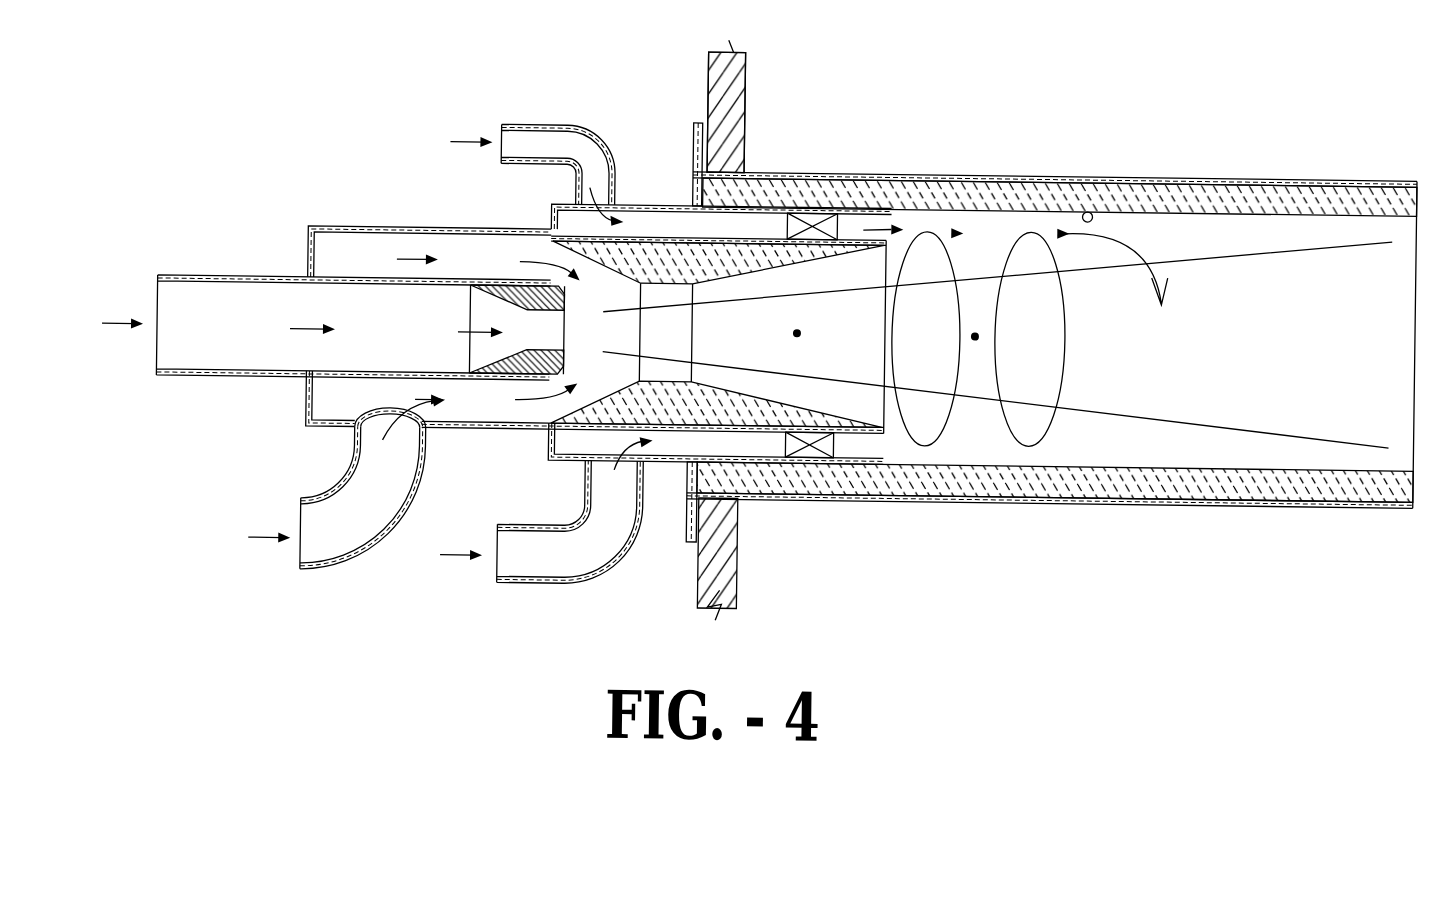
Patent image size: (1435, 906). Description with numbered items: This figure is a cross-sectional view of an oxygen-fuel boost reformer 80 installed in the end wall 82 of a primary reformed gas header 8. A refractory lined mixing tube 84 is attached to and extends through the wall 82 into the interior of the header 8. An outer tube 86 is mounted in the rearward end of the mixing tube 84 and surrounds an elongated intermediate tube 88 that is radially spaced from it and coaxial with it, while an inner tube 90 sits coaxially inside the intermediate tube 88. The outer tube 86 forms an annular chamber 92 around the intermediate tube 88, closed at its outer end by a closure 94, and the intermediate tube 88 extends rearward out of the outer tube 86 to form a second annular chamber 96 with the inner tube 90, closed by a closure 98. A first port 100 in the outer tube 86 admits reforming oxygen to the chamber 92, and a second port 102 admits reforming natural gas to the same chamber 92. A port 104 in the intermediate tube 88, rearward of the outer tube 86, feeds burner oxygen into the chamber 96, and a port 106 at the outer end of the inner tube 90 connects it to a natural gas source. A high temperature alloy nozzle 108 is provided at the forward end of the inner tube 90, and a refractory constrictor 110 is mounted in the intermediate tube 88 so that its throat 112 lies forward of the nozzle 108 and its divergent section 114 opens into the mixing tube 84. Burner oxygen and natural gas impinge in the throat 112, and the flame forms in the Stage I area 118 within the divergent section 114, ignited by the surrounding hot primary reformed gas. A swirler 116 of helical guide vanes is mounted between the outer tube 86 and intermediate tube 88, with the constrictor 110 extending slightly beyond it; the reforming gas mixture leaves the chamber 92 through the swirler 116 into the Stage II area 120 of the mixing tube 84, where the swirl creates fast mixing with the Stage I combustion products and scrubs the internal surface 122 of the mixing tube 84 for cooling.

The primary reformed gas header 8 is at (755, 102).
The oxygen-fuel boost reformer 80 is at (648, 317).
The end wall 82 is at (762, 331).
The refractory lined mixing tube 84 is at (1052, 318).
The outer tube 86 is at (658, 182).
The intermediate tube 88 is at (412, 303).
The inner tube 90 is at (326, 307).
The annular chamber 92 is at (558, 196).
The closure 94 is at (675, 328).
The annular chamber 96 is at (336, 239).
The closure 98 is at (328, 415).
The first port 100 is at (533, 142).
The second port 102 is at (546, 510).
The port 104 is at (345, 482).
The port 106 is at (160, 380).
The nozzle 108 is at (462, 280).
The constrictor 110 is at (803, 280).
The throat 112 is at (504, 364).
The divergent section 114 is at (996, 398).
The swirler 116 is at (860, 294).
The Stage I area 118 is at (917, 443).
The Stage II area 120 is at (1035, 391).
The internal surface 122 is at (1151, 177).